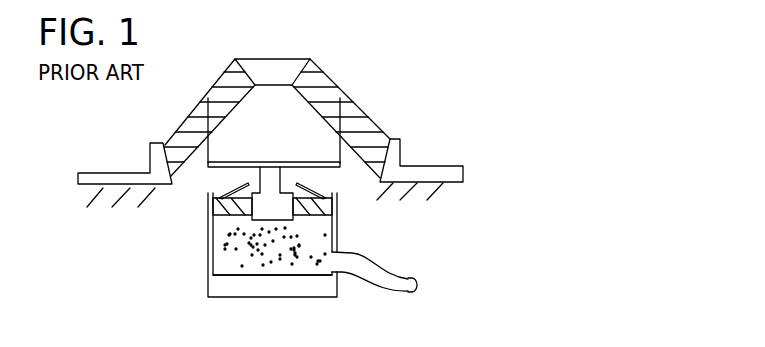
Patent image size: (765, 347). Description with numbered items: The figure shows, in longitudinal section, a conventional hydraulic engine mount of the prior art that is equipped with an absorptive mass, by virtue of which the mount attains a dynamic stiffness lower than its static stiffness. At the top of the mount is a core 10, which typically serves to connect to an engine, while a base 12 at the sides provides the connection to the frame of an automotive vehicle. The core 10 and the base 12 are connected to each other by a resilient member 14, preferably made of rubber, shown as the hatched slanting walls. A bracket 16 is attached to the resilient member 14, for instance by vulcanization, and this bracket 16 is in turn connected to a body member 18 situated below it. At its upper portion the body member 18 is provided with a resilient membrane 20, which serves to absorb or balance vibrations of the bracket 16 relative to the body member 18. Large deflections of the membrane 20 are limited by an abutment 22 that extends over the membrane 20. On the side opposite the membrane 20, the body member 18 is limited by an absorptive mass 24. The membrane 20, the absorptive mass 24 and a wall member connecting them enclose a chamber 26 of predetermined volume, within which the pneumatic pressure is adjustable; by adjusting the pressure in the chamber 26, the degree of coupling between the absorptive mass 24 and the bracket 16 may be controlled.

The core 10 is at (285, 68).
The resilient member 14 is at (323, 97).
The base 12 is at (432, 172).
The bracket 16 is at (207, 160).
The resilient membrane 20 is at (213, 208).
The abutment 22 is at (320, 188).
The body member 18 is at (206, 262).
The absorptive mass 24 is at (228, 288).
The chamber 26 is at (310, 238).